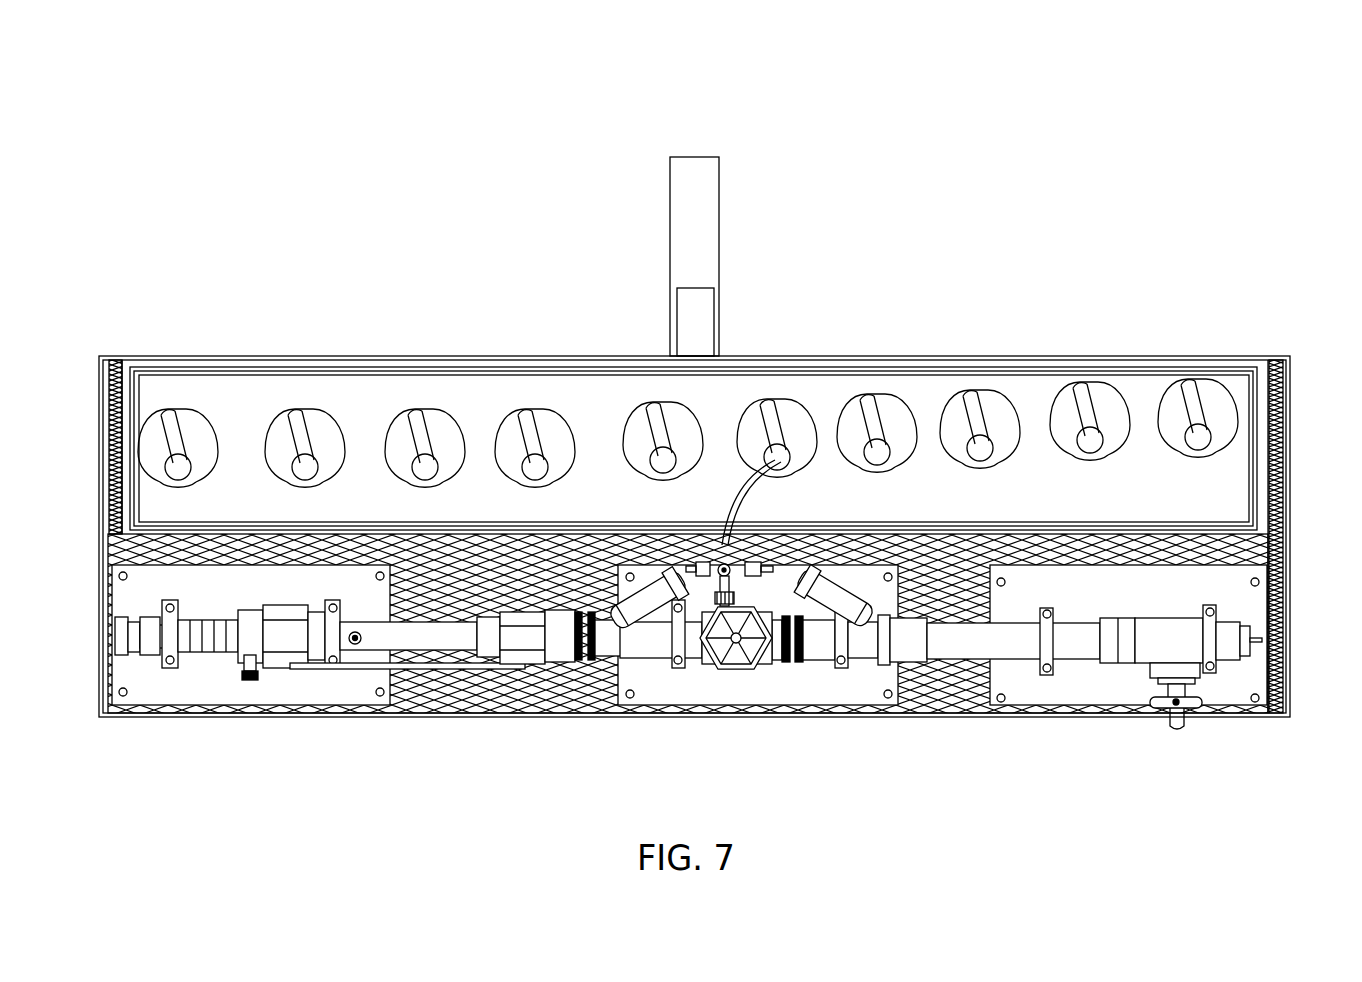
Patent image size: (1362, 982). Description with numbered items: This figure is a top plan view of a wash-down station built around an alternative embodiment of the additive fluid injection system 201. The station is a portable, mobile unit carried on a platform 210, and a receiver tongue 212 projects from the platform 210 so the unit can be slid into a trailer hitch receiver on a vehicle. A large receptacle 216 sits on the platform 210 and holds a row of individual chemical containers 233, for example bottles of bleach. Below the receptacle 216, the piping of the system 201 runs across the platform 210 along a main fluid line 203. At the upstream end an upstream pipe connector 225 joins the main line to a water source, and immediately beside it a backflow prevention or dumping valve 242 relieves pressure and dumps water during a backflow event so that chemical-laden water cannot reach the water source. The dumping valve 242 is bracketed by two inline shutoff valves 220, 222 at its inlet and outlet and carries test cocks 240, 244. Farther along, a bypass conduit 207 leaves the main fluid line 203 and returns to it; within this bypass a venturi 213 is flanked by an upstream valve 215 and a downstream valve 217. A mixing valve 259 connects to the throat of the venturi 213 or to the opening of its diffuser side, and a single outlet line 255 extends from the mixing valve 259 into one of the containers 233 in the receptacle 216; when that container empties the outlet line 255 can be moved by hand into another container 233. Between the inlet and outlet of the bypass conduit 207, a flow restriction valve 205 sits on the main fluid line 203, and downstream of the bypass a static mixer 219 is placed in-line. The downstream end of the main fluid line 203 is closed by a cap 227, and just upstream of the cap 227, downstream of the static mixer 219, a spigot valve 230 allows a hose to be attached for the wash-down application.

The additive fluid injection system 201 is at (485, 185).
The main fluid line 203 is at (647, 647).
The flow restriction valve 205 is at (725, 670).
The bypass conduit 207 is at (617, 538).
The platform 210 is at (440, 715).
The receiver tongue 212 is at (683, 201).
The venturi 213 is at (756, 562).
The upstream valve 215 is at (680, 570).
The receptacle 216 is at (214, 355).
The downstream valve 217 is at (818, 565).
The static mixer 219 is at (962, 648).
The inline shutoff valve 220 is at (283, 648).
The inline shutoff valve 222 is at (520, 643).
The upstream pipe connector 225 is at (132, 652).
The cap 227 is at (1243, 650).
The spigot valve 230 is at (1175, 720).
The chemical containers 233 is at (440, 427).
The test cock 240 is at (243, 678).
The dumping valve 242 is at (410, 657).
The test cock 244 is at (352, 650).
The outlet line 255 is at (742, 478).
The mixing valve 259 is at (735, 593).